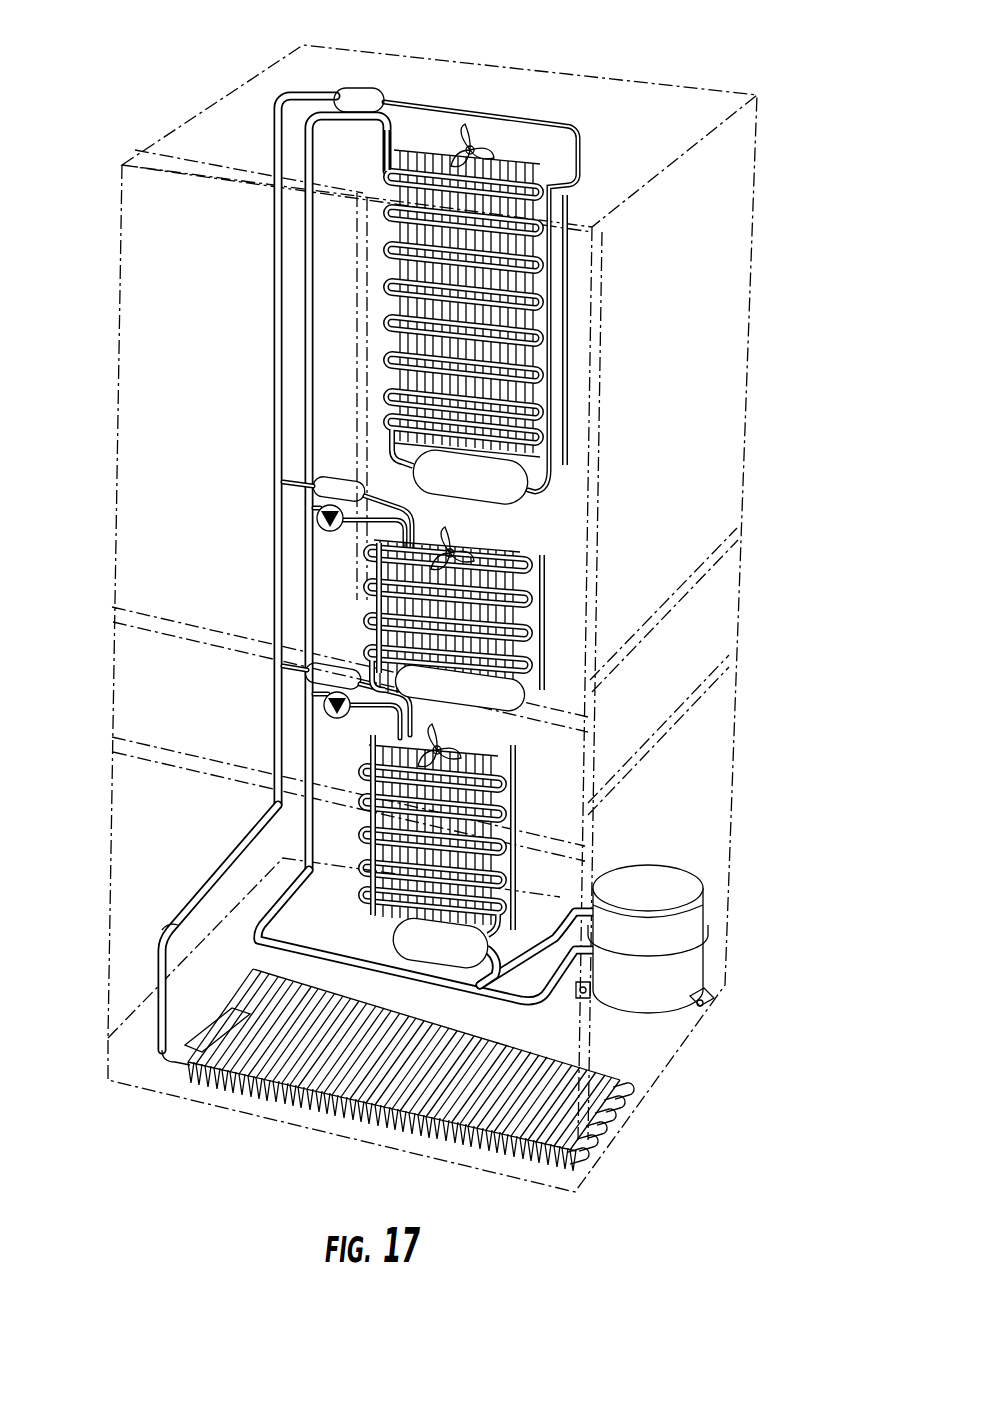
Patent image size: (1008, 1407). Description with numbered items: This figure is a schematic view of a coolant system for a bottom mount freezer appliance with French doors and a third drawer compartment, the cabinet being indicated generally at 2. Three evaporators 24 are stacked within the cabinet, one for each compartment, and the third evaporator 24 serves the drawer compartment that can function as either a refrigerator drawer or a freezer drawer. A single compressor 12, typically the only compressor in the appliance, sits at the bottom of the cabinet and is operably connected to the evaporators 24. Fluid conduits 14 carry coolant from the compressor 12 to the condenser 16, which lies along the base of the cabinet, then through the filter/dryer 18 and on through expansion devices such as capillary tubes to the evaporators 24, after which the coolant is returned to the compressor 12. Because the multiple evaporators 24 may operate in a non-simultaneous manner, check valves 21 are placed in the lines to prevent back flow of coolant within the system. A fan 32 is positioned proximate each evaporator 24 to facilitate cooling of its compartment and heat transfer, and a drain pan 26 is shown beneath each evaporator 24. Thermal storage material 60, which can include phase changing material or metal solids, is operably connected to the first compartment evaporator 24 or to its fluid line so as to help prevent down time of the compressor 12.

The refrigerator cabinet 2 is at (775, 232).
The single compressor 12 is at (652, 995).
The fluid conduits 14 is at (345, 977).
The condenser 16 is at (338, 478).
The filter/dryer 18 is at (195, 1005).
The check valve 21 is at (317, 521).
The evaporator 24 is at (555, 383).
The drain pan 26 is at (483, 492).
The fan 32 is at (465, 135).
The thermal storage material 60 is at (313, 690).